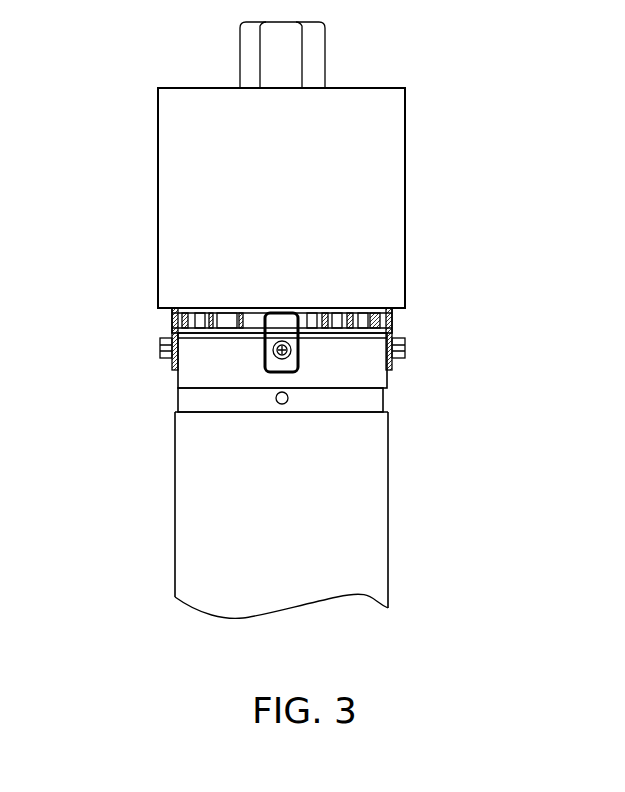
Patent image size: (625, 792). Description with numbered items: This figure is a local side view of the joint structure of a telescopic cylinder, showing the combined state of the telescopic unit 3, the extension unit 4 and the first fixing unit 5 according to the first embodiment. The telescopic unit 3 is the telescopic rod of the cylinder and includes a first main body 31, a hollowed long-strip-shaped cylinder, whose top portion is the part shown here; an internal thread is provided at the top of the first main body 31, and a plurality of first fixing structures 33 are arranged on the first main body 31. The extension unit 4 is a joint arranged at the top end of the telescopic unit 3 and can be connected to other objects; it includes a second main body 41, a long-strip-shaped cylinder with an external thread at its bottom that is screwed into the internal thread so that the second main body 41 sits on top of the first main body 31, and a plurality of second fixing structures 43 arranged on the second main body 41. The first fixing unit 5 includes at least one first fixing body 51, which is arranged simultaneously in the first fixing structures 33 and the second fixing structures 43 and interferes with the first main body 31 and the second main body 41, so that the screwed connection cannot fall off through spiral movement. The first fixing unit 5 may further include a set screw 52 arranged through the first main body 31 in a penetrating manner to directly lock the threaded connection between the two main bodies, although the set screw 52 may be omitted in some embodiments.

The extension unit 4 is at (288, 165).
The second main body 41 is at (370, 190).
The second fixing structures 43 is at (332, 318).
The first fixing unit 5 is at (288, 313).
The first fixing body 51 is at (280, 328).
The set screw 52 is at (288, 403).
The telescopic unit 3 is at (228, 376).
The first fixing structures 33 is at (255, 362).
The first main body 31 is at (233, 527).